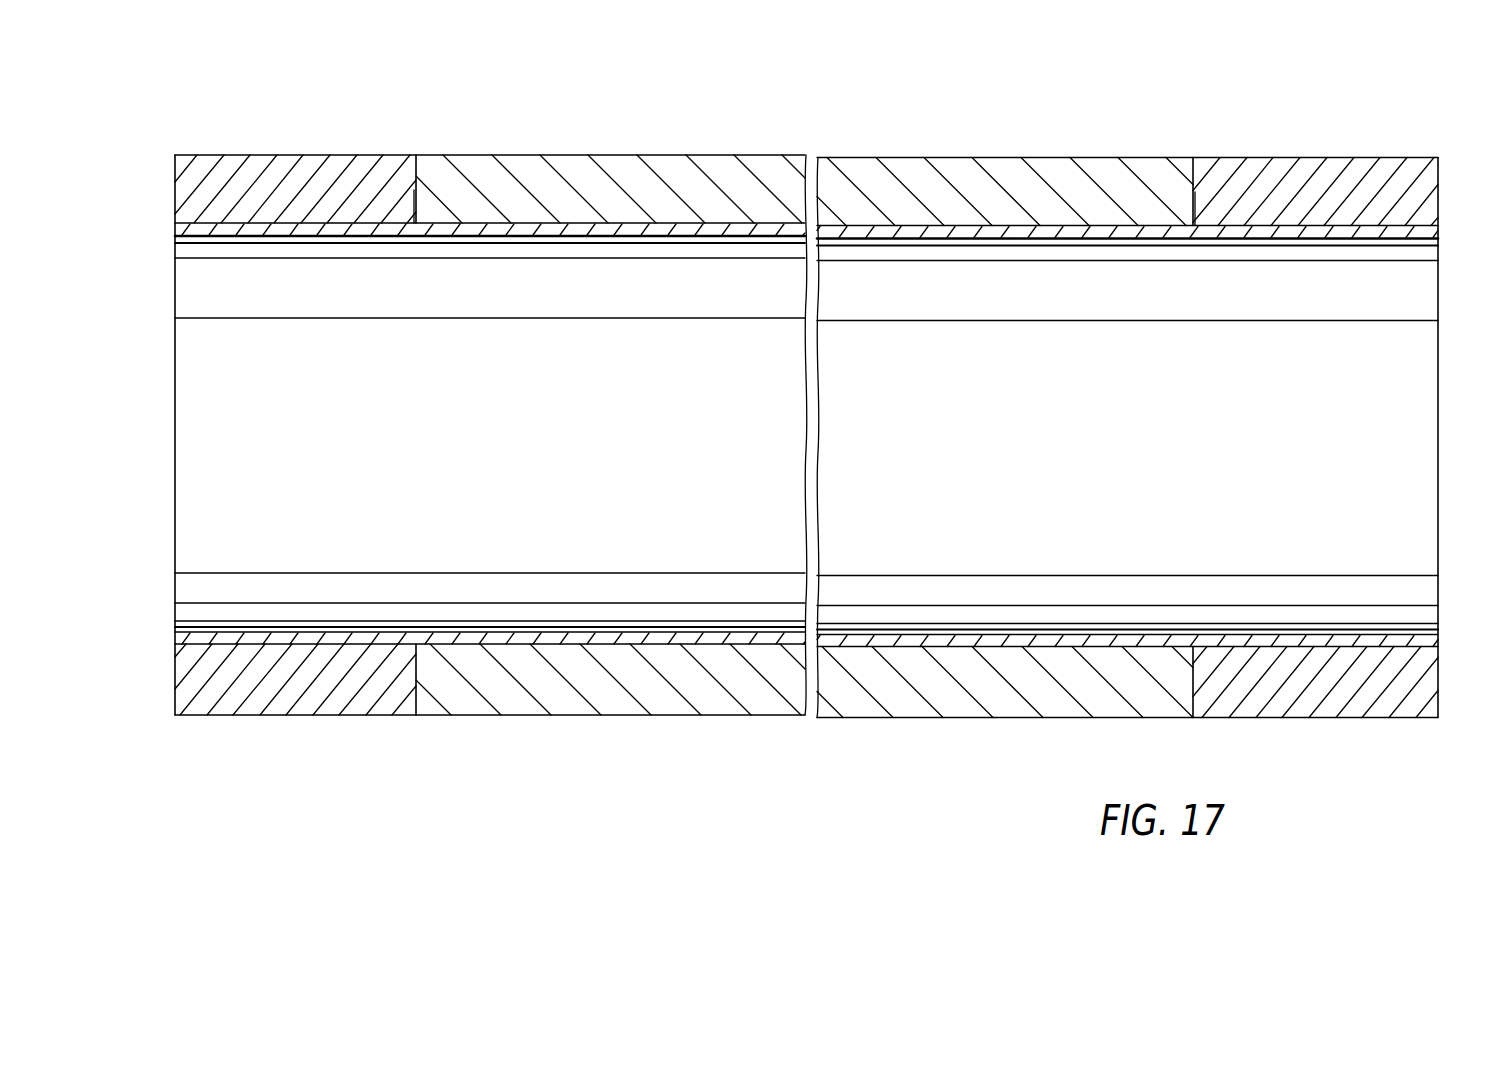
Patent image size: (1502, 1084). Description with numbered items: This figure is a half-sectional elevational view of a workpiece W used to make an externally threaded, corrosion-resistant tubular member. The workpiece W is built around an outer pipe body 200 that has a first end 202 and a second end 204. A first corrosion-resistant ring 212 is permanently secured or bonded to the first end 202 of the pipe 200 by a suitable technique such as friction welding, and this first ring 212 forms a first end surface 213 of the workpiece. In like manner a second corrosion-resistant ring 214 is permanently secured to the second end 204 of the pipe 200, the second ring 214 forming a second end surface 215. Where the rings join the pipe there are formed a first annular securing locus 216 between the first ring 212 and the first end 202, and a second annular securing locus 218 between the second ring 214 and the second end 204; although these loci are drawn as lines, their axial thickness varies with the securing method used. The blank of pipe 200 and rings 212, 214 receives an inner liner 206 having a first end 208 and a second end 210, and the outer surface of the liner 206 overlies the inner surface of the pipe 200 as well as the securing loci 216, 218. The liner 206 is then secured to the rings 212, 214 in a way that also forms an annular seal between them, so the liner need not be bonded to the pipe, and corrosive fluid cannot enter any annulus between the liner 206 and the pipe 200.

The outer pipe body 200 is at (689, 170).
The first end of pipe 202 is at (1192, 188).
The second end of pipe 204 is at (413, 185).
The inner liner 206 is at (718, 233).
The first end of liner 208 is at (1439, 239).
The second end of liner 210 is at (176, 232).
The first corrosion-resistant ring 212 is at (1296, 158).
The first end surface 213 is at (1439, 199).
The second corrosion-resistant ring 214 is at (316, 155).
The second end surface 215 is at (177, 185).
The first annular securing locus 216 is at (1194, 200).
The second annular securing locus 218 is at (417, 199).
The workpiece W is at (638, 114).